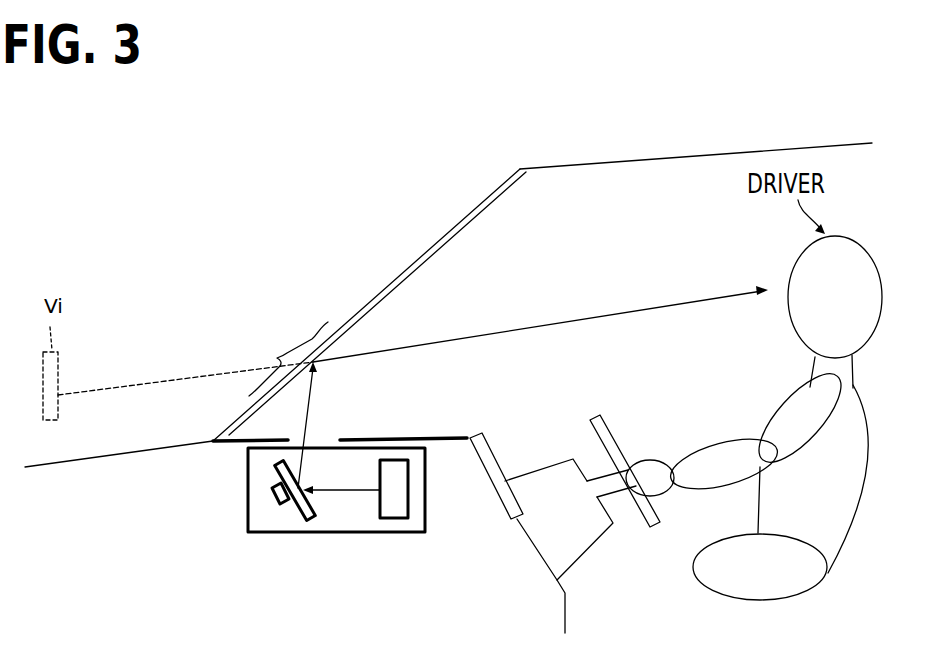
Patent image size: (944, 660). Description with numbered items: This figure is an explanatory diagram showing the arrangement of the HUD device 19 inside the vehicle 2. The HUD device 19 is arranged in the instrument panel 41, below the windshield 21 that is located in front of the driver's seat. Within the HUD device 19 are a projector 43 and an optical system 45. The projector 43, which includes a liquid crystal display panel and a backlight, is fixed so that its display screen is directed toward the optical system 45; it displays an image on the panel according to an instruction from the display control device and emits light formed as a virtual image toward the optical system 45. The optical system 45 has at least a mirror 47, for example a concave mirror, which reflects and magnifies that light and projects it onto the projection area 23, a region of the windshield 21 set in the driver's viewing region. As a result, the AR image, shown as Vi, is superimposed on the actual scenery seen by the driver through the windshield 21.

The vehicle 2 is at (410, 184).
The windshield 21 is at (375, 294).
The projection area 23 is at (288, 359).
The instrument panel 41 is at (440, 437).
The HUD device 19 is at (238, 538).
The projector 43 is at (387, 529).
The optical system 45 is at (264, 501).
The mirror 47 is at (322, 510).